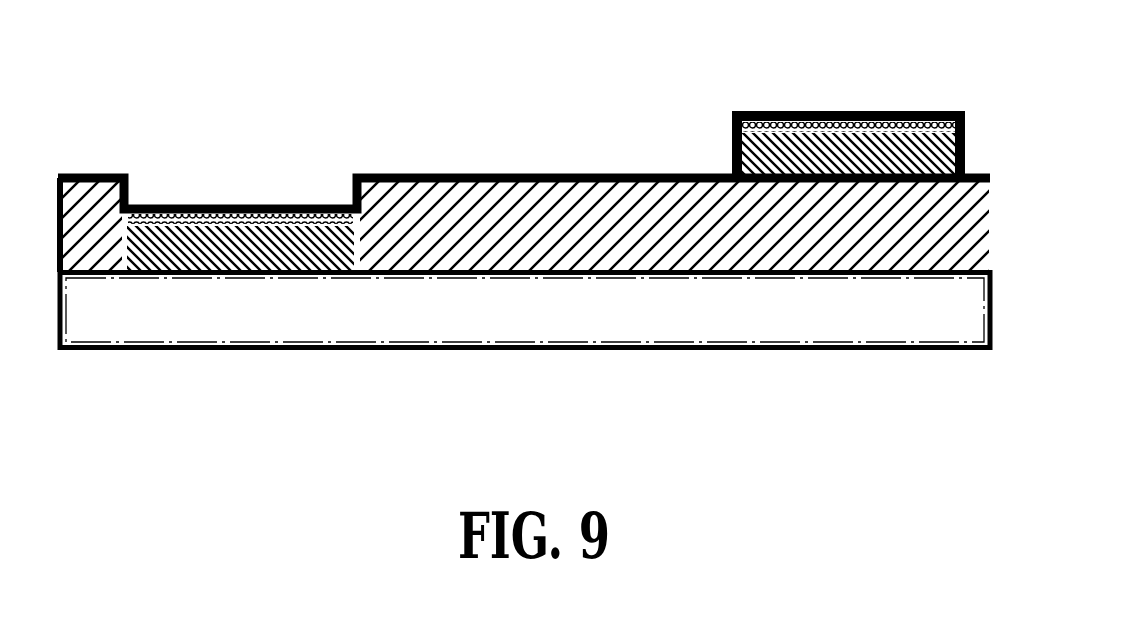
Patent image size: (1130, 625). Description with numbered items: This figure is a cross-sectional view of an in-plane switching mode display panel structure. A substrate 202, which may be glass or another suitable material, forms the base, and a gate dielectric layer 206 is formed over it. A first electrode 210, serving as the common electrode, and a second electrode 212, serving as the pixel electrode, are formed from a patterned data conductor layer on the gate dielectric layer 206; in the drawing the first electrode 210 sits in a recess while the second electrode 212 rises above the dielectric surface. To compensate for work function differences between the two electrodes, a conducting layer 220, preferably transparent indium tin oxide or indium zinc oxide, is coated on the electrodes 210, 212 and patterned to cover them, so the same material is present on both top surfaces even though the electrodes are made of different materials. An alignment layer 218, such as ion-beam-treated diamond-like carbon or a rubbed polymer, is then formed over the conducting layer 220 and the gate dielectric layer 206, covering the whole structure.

The substrate 202 is at (977, 310).
The gate dielectric layer 206 is at (980, 215).
The first electrode 210 is at (161, 243).
The second electrode 212 is at (900, 147).
The alignment layer 218 is at (986, 178).
The conducting layer 220 is at (297, 205).